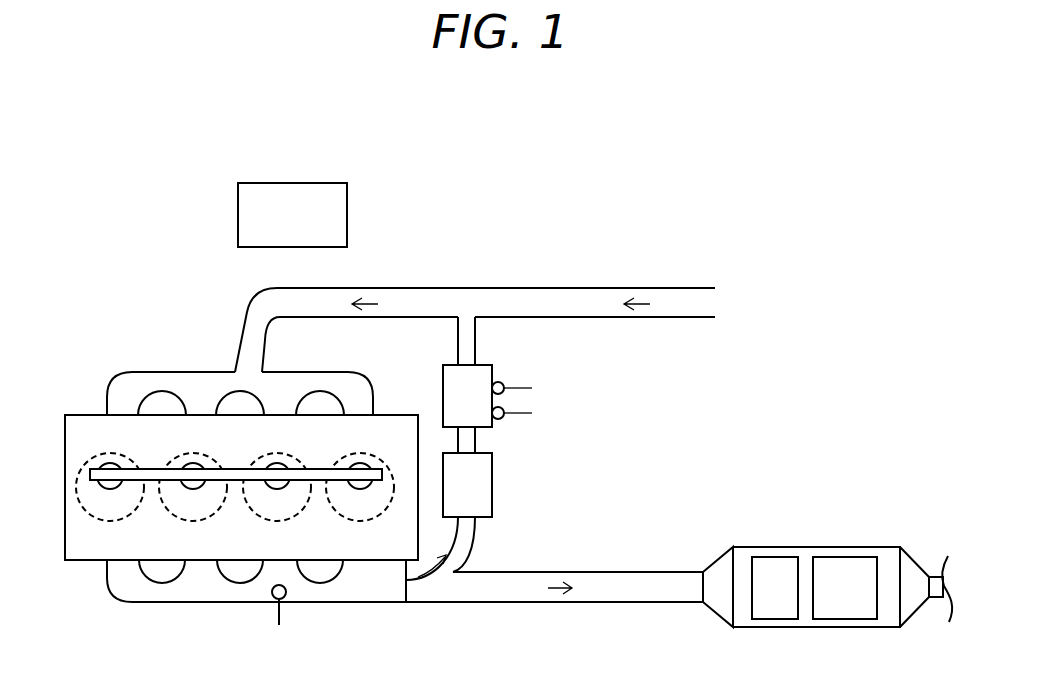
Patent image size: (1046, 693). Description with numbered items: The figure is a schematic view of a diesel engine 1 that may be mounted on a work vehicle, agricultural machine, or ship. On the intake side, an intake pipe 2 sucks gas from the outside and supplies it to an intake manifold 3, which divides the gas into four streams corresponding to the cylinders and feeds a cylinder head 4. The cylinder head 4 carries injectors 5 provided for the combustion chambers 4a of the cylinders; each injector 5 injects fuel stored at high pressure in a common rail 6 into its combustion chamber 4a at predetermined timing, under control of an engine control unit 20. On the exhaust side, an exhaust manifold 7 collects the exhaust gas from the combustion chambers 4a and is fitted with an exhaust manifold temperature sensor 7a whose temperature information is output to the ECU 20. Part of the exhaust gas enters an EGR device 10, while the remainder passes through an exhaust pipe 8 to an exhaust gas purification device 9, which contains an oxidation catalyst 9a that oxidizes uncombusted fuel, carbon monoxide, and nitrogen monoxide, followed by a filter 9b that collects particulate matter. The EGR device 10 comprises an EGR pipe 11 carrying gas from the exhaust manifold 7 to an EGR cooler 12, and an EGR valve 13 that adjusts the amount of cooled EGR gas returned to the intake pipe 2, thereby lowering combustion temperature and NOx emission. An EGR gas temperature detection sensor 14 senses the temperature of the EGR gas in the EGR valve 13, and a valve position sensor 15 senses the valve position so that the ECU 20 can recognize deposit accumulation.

The engine 1 is at (812, 170).
The intake pipe 2 is at (572, 287).
The intake manifold 3 is at (368, 398).
The cylinder head 4 is at (87, 413).
The combustion chamber 4a is at (92, 513).
The injector 5 is at (112, 464).
The common rail 6 is at (235, 481).
The exhaust manifold 7 is at (377, 590).
The exhaust manifold temperature sensor 7a is at (272, 591).
The exhaust pipe 8 is at (640, 604).
The exhaust gas purification device 9 is at (827, 532).
The oxidation catalyst 9a is at (773, 572).
The filter 9b is at (845, 559).
The EGR device 10 is at (563, 448).
The EGR pipe 11 is at (463, 545).
The EGR cooler 12 is at (481, 485).
The EGR valve 13 is at (493, 372).
The EGR gas temperature detection sensor 14 is at (504, 386).
The valve position sensor 15 is at (505, 415).
The engine control unit (ECU) 20 is at (291, 183).